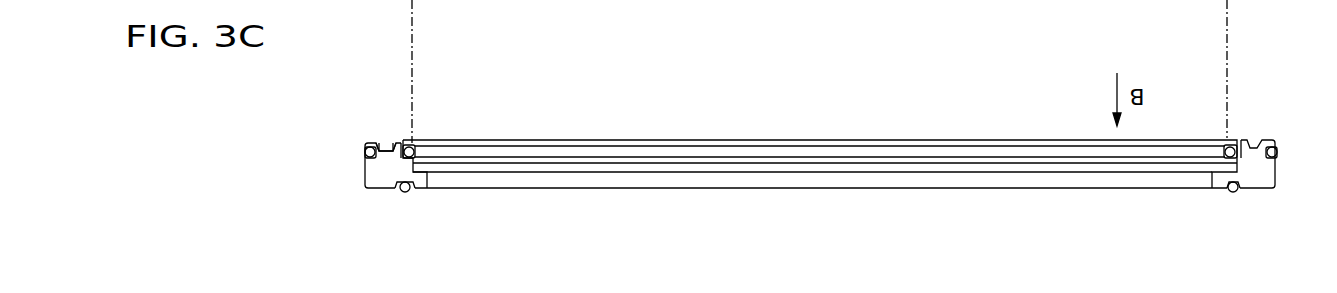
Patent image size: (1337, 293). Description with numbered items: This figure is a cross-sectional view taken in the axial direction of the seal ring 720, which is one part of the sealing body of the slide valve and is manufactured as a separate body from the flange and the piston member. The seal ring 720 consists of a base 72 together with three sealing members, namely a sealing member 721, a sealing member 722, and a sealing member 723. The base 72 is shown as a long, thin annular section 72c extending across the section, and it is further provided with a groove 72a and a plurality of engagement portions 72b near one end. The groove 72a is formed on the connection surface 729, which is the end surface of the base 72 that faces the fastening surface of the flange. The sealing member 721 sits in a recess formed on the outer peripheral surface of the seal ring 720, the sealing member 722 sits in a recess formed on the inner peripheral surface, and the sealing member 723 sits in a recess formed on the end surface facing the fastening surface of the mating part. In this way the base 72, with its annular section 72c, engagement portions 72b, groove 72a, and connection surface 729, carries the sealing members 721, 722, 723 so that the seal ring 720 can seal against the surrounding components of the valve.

The base 72 is at (717, 140).
The groove 72a is at (382, 145).
The engagement portions 72b is at (393, 142).
The annular section 72c is at (417, 178).
The seal ring 720 is at (955, 127).
The sealing member 721 is at (362, 148).
The sealing member 722 is at (413, 144).
The sealing member 723 is at (408, 192).
The connection surface 729 is at (368, 143).